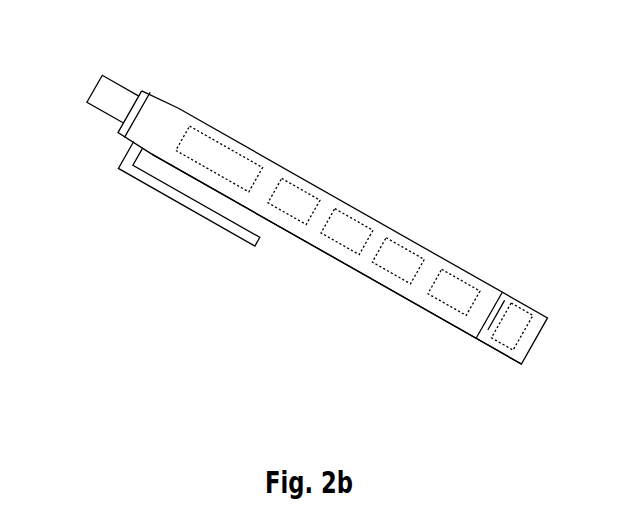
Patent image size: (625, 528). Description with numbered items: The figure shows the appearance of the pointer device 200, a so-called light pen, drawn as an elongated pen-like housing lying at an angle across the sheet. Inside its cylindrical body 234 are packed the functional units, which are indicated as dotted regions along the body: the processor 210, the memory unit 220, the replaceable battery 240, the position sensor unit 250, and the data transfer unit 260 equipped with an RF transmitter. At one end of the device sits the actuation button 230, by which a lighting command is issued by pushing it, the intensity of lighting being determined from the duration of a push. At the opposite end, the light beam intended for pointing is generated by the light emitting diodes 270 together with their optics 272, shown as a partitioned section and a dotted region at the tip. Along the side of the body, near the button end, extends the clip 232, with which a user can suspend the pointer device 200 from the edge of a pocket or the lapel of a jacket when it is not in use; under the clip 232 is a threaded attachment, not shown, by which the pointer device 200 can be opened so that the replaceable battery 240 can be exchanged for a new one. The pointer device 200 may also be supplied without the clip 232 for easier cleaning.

The pointer device 200 is at (475, 96).
The processor 210 is at (413, 241).
The memory unit 220 is at (470, 280).
The actuation button 230 is at (95, 93).
The clip 232 is at (146, 184).
The cylindrical body 234 is at (386, 289).
The replaceable battery 240 is at (224, 143).
The position sensor unit 250 is at (343, 216).
The data transfer unit 260 is at (303, 185).
The light emitting diodes 270 is at (487, 328).
The optics 272 is at (531, 311).